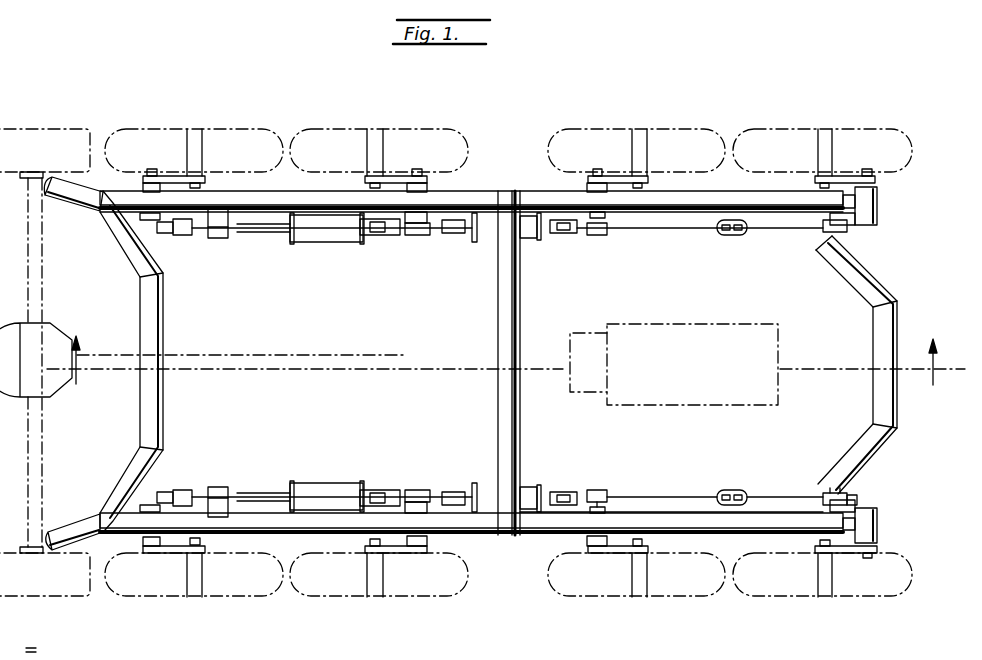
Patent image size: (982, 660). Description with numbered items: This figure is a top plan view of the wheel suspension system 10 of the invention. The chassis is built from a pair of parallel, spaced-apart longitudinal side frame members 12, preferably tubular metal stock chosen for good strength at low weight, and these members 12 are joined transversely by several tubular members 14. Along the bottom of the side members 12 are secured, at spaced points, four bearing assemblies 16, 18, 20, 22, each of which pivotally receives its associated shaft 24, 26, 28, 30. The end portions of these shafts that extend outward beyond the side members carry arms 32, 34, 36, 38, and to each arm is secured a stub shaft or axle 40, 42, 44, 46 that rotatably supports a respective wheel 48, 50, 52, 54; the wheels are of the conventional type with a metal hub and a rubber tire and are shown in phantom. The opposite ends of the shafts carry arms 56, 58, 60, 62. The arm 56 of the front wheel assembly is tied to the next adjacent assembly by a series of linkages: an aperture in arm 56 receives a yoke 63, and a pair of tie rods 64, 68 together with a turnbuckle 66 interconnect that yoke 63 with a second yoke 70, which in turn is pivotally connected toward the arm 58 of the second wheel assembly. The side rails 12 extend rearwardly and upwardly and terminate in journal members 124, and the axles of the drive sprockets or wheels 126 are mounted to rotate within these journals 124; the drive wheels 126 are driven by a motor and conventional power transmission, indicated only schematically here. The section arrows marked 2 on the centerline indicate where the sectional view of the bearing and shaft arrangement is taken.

The section line 2- 2 is at (504, 369).
The wheel suspension system 10 is at (488, 380).
The longitudinal side frame member 12 is at (483, 196).
The tubular member 14 is at (163, 285).
The bearing assembly 16 is at (878, 530).
The bearing assembly 18 is at (587, 540).
The bearing assembly 20 is at (427, 540).
The bearing assembly 22 is at (140, 540).
The shaft 24 is at (872, 502).
The shaft 26 is at (608, 502).
The shaft 28 is at (432, 501).
The shaft 30 is at (159, 493).
The arm 32 is at (852, 548).
The arm 34 is at (620, 550).
The arm 36 is at (400, 553).
The arm 38 is at (170, 553).
The stub shaft or axle 40 is at (827, 588).
The stub shaft or axle 42 is at (642, 588).
The stub shaft or axle 44 is at (377, 588).
The stub shaft or axle 46 is at (195, 590).
The wheel 48 is at (763, 588).
The wheel 50 is at (575, 587).
The wheel 52 is at (317, 592).
The wheel 54 is at (132, 587).
The arm 56 is at (858, 497).
The arm 58 is at (589, 491).
The arm 60 is at (421, 493).
The arm 62 is at (182, 494).
The yoke 63 is at (824, 493).
The tie rod 64 is at (780, 492).
The turnbuckle 66 is at (738, 491).
The tie rod 68 is at (668, 494).
The yoke 70 is at (573, 493).
The journal member 124 is at (37, 545).
The drive sprocket or wheel 126 is at (52, 582).